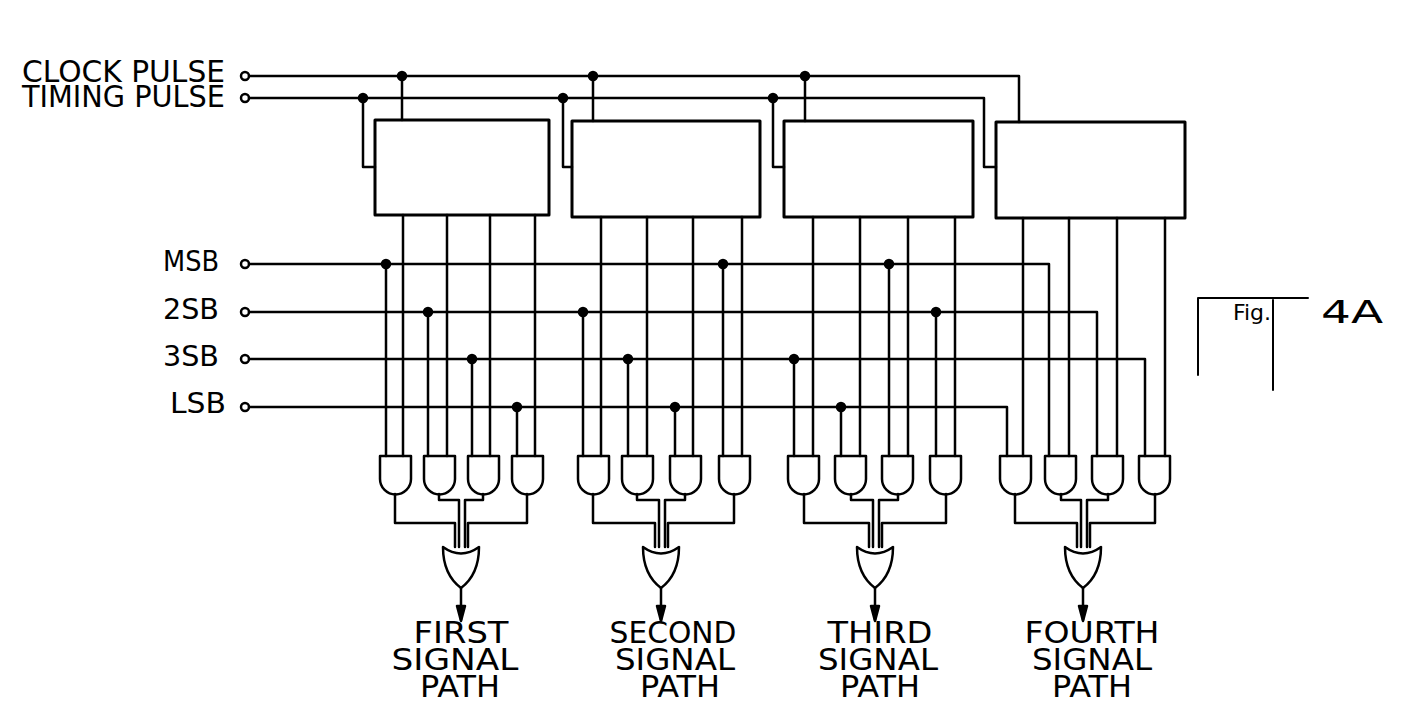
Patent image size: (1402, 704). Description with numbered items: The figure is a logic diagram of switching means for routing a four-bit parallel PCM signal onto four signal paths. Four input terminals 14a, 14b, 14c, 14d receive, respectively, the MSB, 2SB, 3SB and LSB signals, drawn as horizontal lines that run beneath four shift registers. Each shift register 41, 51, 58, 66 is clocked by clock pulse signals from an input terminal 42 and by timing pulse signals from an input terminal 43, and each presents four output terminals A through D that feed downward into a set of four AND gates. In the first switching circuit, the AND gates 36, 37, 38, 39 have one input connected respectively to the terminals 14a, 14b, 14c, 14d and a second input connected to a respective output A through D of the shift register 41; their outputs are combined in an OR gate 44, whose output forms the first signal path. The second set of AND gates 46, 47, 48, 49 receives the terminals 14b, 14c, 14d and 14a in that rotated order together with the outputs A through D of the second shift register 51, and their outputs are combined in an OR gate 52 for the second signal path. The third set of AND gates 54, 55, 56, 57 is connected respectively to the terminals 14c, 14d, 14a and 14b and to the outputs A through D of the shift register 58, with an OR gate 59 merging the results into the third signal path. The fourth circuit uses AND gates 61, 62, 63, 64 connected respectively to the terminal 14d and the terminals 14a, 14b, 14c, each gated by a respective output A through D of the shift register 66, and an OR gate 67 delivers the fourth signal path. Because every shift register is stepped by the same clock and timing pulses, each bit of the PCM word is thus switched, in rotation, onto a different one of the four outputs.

The clock pulse input terminal 42 is at (249, 74).
The timing pulse input terminal 43 is at (250, 100).
The MSB input terminal 14a is at (250, 262).
The 2SB input terminal 14b is at (250, 310).
The 3SB input terminal 14c is at (250, 357).
The LSB input terminal 14d is at (250, 405).
The shift register 41 is at (548, 222).
The second shift register 51 is at (760, 224).
The shift register 58 is at (973, 224).
The shift register 66 is at (1185, 226).
The AND gate 36 is at (381, 484).
The AND gate 37 is at (425, 484).
The AND gate 38 is at (497, 484).
The AND gate 39 is at (542, 484).
The OR gate 44 is at (480, 560).
The AND gate 46 is at (577, 466).
The AND gate 47 is at (623, 484).
The AND gate 48 is at (699, 484).
The AND gate 49 is at (745, 490).
The OR gate 52 is at (680, 560).
The AND gate 54 is at (787, 490).
The AND gate 55 is at (836, 484).
The AND gate 56 is at (912, 484).
The AND gate 57 is at (963, 466).
The OR gate 59 is at (894, 560).
The AND gate 61 is at (1001, 484).
The AND gate 62 is at (1046, 484).
The AND gate 63 is at (1122, 484).
The AND gate 64 is at (1169, 488).
The OR gate 67 is at (1102, 562).